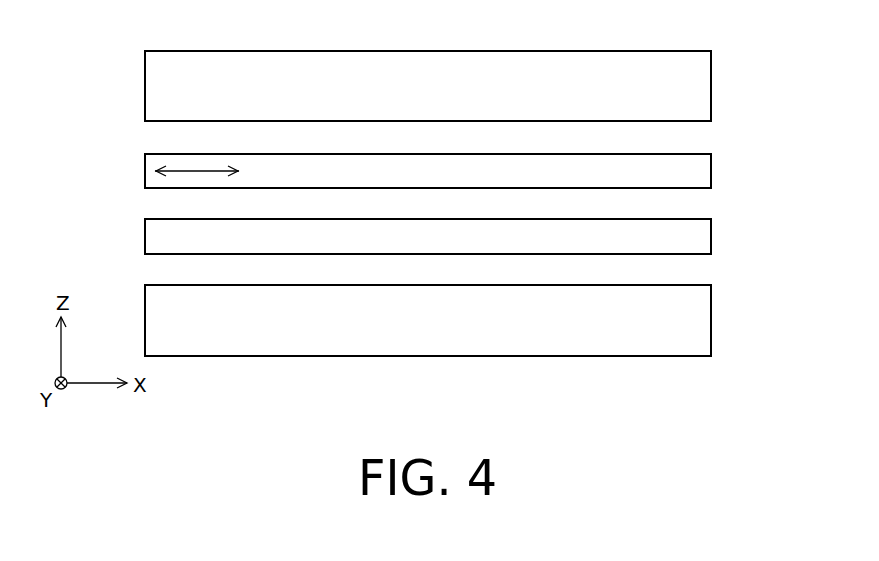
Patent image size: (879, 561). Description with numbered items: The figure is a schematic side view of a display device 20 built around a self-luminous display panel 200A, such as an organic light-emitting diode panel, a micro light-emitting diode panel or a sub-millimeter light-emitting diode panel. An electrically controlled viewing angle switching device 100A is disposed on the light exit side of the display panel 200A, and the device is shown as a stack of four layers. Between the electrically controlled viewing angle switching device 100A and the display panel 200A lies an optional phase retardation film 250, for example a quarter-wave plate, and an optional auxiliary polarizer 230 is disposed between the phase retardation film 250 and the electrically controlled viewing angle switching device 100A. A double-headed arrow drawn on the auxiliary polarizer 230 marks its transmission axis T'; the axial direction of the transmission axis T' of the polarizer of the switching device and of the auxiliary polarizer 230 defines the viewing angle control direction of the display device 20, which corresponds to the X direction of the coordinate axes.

The electrically controlled viewing angle switching device 100A is at (711, 85).
The auxiliary polarizer 230 is at (711, 168).
The phase retardation film 250 is at (711, 234).
The display panel 200A is at (711, 331).
The display device 20 is at (743, 399).
The transmission axis T' is at (174, 149).